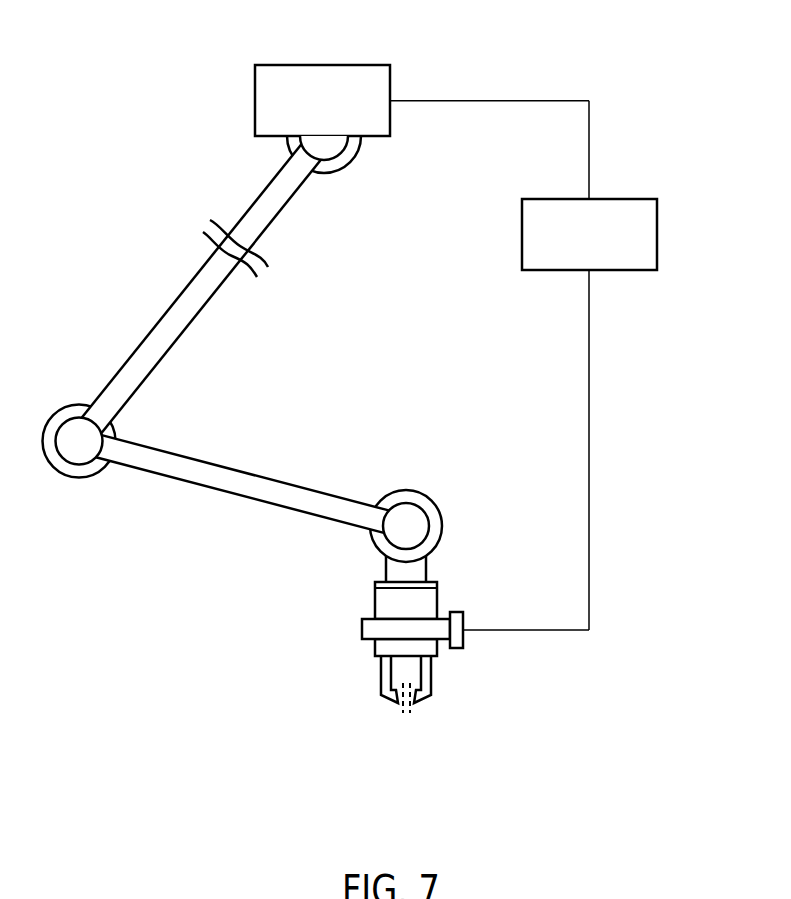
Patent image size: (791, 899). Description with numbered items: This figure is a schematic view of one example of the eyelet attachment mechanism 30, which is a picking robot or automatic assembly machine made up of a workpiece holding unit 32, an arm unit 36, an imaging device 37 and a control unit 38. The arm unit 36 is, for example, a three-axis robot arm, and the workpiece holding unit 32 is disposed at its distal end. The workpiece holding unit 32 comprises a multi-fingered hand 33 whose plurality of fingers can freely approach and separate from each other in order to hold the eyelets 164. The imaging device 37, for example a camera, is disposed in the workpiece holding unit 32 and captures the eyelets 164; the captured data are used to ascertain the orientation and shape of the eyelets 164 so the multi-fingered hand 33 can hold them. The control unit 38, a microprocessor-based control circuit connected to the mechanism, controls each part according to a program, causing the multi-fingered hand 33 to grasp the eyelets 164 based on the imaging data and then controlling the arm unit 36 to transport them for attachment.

The eyelet attachment mechanism 30 is at (117, 50).
The workpiece holding unit 32 is at (333, 619).
The multi-fingered hand 33 is at (381, 678).
The arm unit 36 is at (198, 462).
The imaging device 37 is at (463, 622).
The control unit 38 is at (615, 198).
The eyelet 164 is at (404, 713).